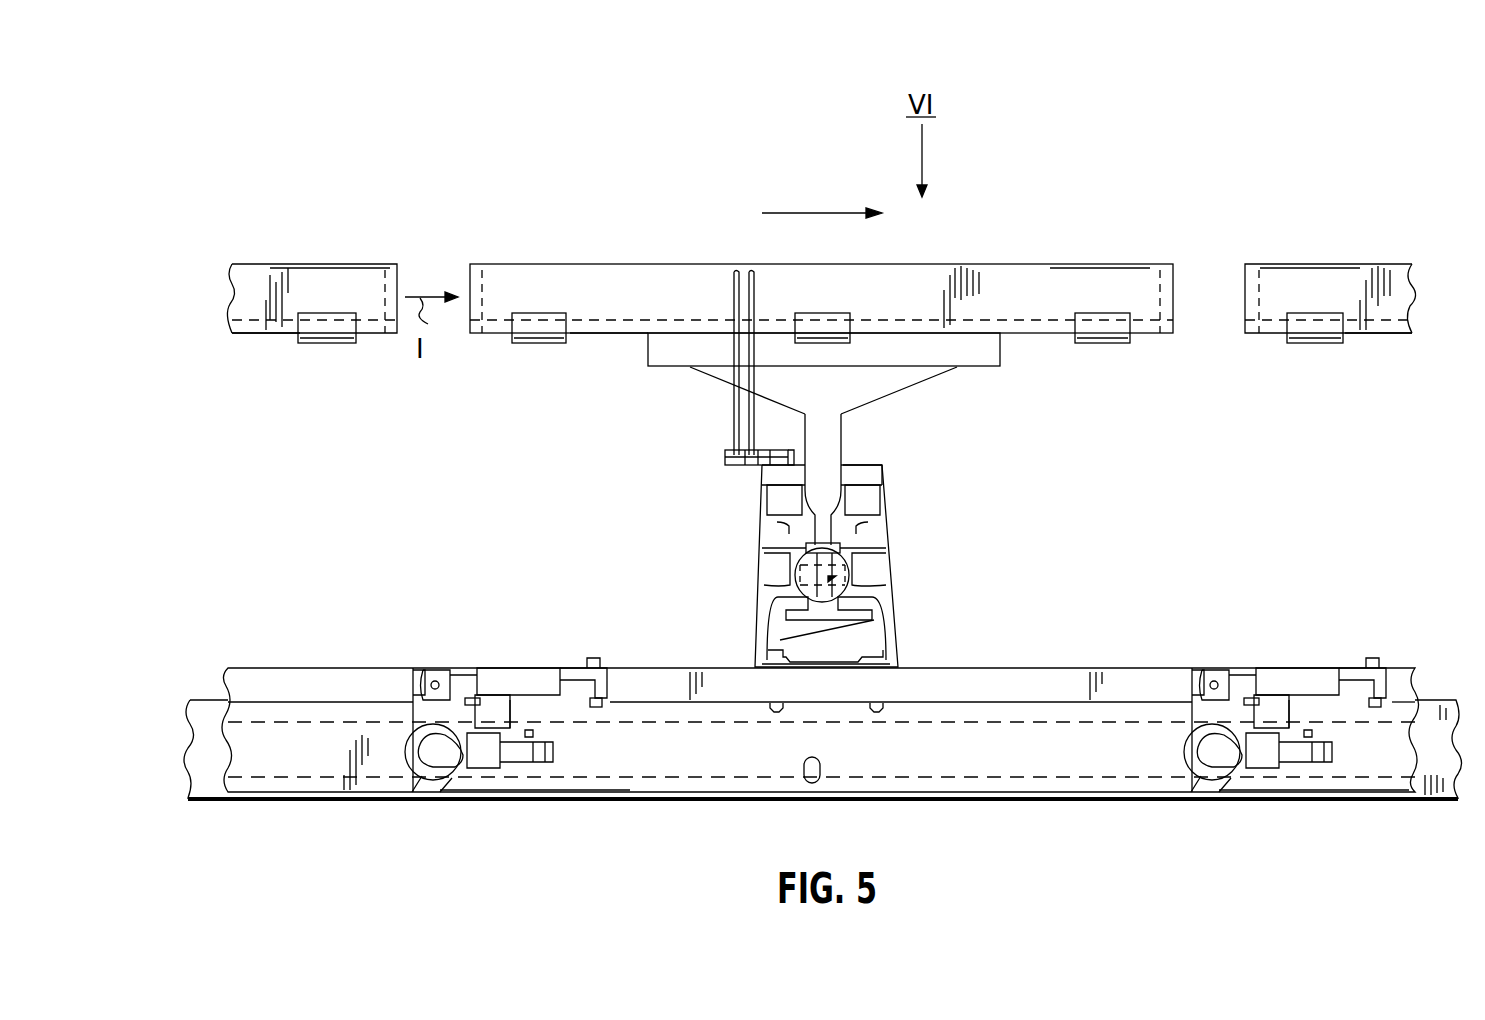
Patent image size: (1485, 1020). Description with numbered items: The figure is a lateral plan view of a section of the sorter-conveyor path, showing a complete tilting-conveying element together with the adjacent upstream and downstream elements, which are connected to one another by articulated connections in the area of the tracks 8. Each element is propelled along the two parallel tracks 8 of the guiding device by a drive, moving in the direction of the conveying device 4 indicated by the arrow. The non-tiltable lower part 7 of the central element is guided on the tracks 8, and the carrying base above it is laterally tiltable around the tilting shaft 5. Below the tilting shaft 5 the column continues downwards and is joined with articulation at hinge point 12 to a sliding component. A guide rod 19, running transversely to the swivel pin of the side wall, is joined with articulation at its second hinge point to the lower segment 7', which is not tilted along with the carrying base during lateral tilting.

The conveying device 4 is at (818, 212).
The tilting shaft 5 is at (864, 491).
The lower part 7 is at (782, 540).
The lower segment 7' is at (804, 423).
The tracks 8 is at (217, 800).
The hinge point 12 is at (846, 577).
The guide rod 19 is at (736, 408).